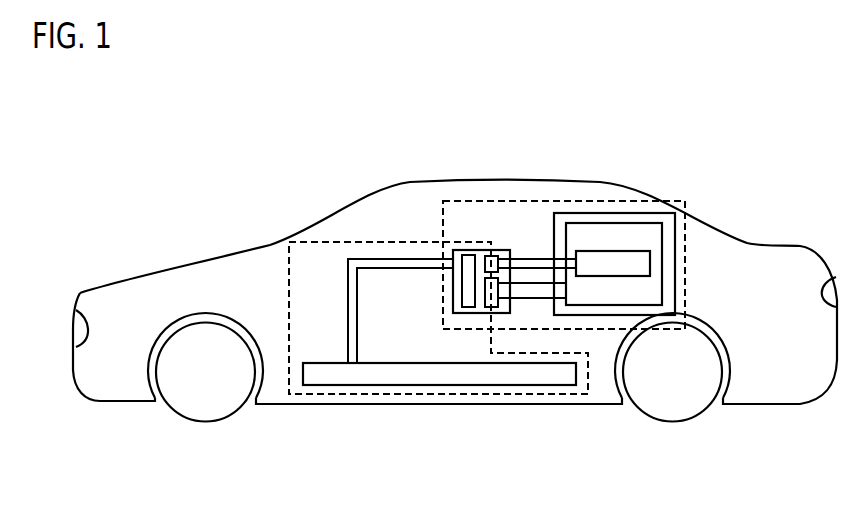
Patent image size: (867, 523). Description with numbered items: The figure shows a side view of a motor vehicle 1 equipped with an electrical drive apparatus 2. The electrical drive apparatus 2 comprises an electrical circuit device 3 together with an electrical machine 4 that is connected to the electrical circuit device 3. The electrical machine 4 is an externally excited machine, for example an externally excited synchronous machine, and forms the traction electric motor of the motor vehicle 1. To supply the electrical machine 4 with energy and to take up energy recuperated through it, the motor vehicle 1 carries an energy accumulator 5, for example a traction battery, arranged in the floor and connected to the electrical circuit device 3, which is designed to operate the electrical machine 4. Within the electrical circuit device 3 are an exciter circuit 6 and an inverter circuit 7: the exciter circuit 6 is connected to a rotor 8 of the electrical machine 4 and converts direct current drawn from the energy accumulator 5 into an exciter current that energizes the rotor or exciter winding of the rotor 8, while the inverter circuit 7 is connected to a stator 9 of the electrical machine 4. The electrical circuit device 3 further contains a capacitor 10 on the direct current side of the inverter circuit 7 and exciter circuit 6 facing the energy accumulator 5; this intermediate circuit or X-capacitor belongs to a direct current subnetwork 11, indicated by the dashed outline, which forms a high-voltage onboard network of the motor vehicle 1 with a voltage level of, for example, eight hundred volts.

The motor vehicle 1 is at (687, 182).
The electrical drive apparatus 2 is at (670, 328).
The electrical circuit device 3 is at (478, 250).
The electrical machine 4 is at (675, 243).
The energy accumulator 5 is at (343, 373).
The exciter circuit 6 is at (493, 253).
The inverter circuit 7 is at (497, 308).
The rotor 8 is at (632, 252).
The stator 9 is at (614, 213).
The capacitor 10 is at (491, 306).
The direct current subnetwork 11 is at (342, 243).